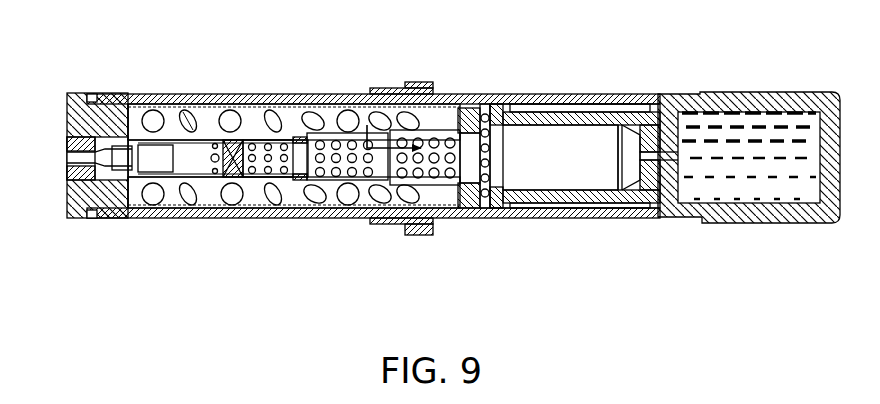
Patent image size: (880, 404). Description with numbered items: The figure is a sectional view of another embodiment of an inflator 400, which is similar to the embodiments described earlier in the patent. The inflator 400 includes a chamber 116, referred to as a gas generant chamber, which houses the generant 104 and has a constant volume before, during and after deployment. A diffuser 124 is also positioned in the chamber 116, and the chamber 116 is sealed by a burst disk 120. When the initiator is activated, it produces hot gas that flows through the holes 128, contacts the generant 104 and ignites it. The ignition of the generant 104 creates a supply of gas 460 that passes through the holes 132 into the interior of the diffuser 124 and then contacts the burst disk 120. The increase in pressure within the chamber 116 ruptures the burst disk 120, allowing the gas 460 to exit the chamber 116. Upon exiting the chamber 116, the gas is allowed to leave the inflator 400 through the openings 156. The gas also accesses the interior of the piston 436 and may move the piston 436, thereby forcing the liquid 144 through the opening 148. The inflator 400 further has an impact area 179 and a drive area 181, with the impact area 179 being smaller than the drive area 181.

The inflator 400 is at (143, 232).
The generant 104 is at (230, 122).
The chamber 116 is at (262, 198).
The diffuser 124 is at (286, 143).
The holes 128 is at (212, 178).
The holes 132 is at (367, 162).
The gas 460 is at (383, 100).
The burst disk 120 is at (470, 162).
The openings 156 is at (468, 100).
The drive area 181 is at (485, 96).
The opening 148 is at (652, 150).
The piston 436 is at (537, 153).
The impact area 179 is at (737, 92).
The liquid 144 is at (737, 165).